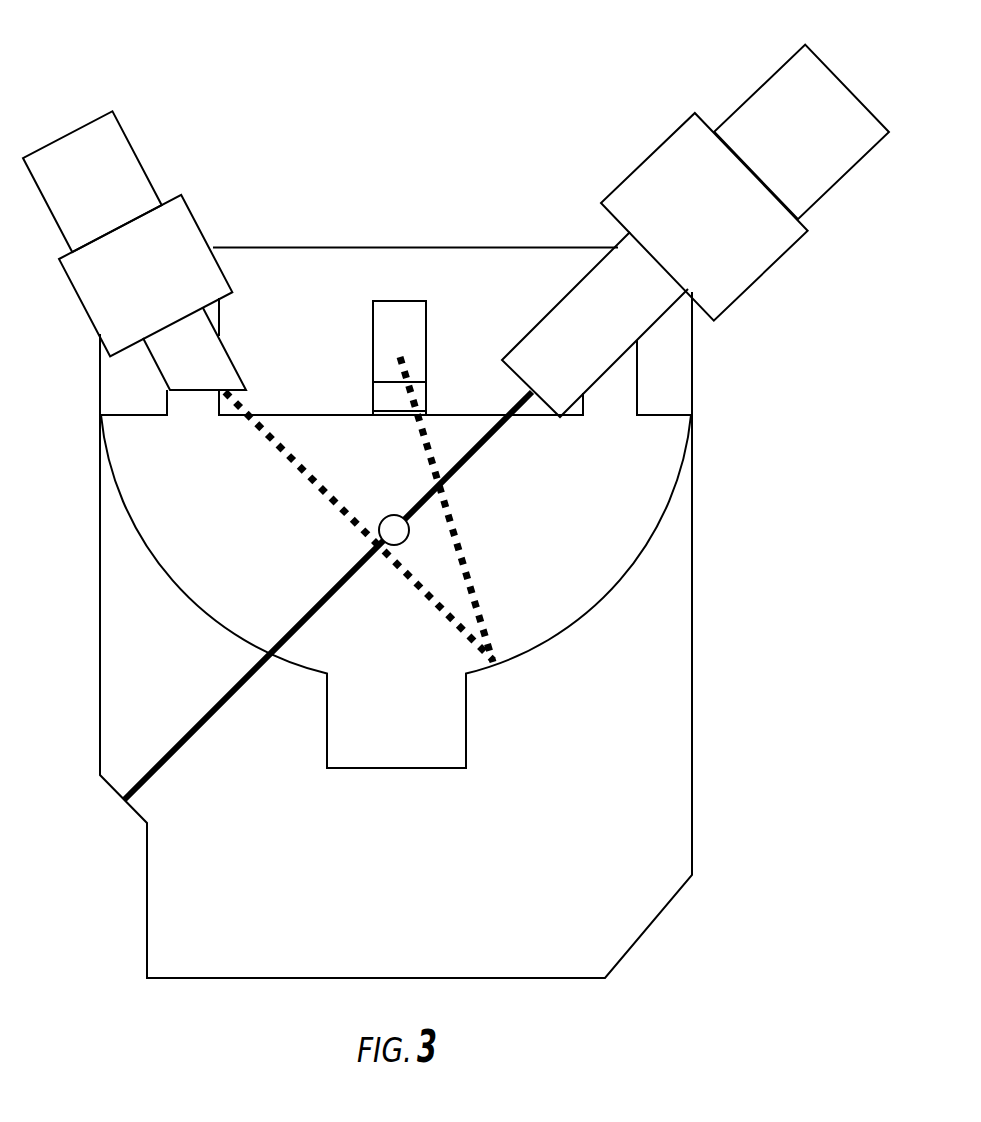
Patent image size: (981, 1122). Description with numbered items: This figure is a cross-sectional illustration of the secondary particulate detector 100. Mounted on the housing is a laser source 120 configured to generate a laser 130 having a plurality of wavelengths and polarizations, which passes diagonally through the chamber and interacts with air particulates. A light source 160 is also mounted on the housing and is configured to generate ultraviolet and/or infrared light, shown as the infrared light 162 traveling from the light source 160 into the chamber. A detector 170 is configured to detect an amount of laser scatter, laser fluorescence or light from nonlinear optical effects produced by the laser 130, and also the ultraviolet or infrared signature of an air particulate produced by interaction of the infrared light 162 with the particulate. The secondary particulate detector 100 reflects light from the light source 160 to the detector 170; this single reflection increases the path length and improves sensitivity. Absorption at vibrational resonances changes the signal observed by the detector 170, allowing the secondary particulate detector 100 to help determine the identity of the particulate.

The secondary particulate detector 100 is at (190, 70).
The laser source 120 is at (826, 107).
The laser 130 is at (320, 597).
The light source 160 is at (172, 258).
The infrared light 162 is at (467, 568).
The detector 170 is at (394, 347).